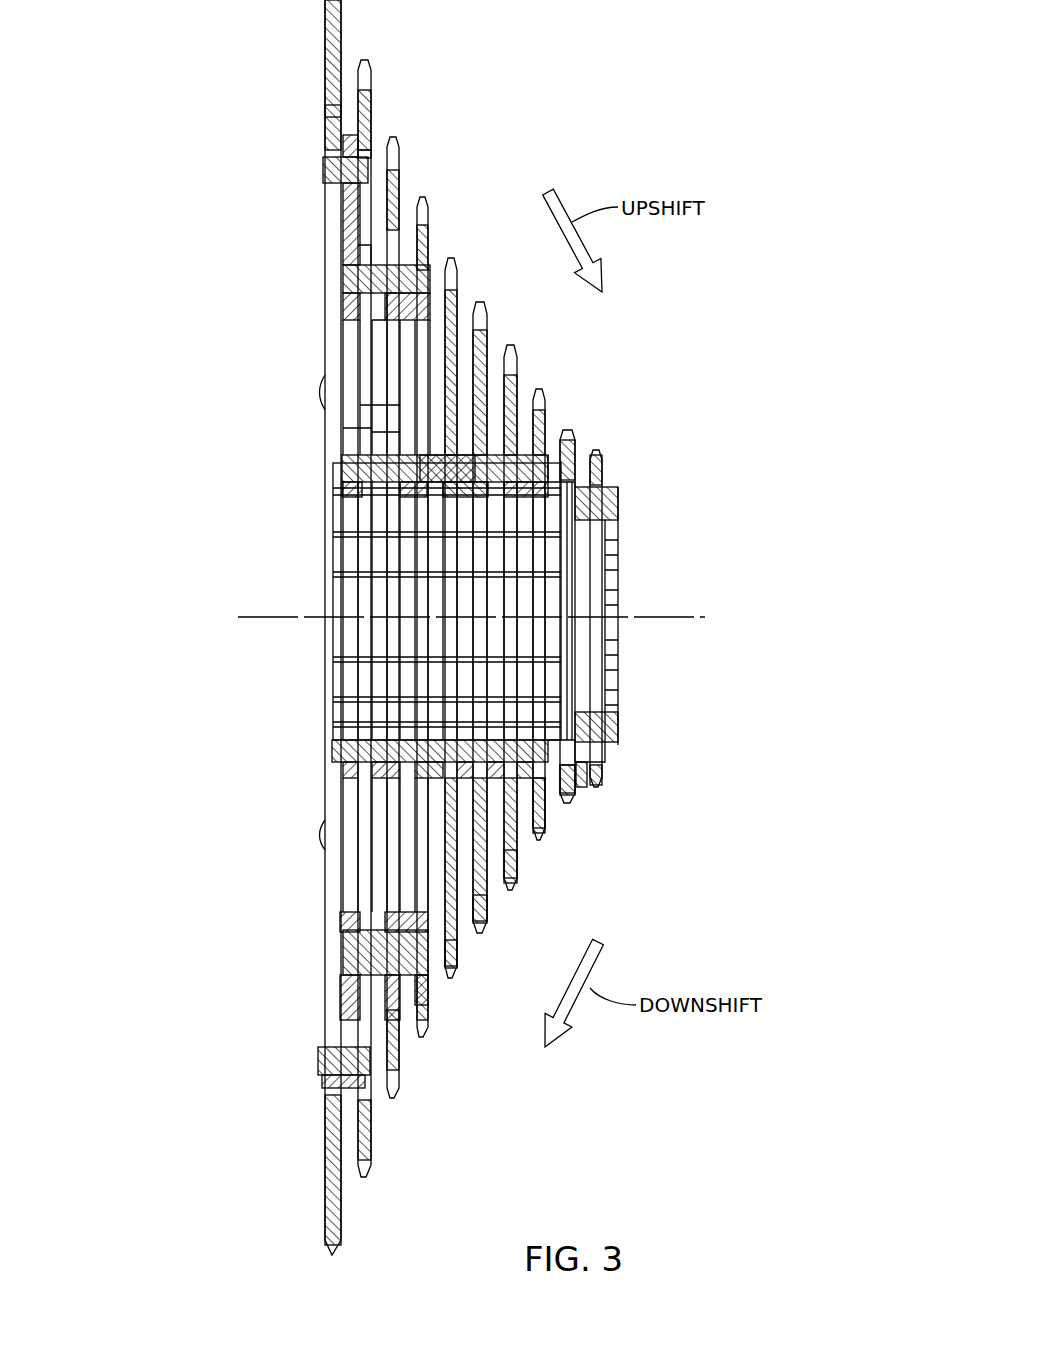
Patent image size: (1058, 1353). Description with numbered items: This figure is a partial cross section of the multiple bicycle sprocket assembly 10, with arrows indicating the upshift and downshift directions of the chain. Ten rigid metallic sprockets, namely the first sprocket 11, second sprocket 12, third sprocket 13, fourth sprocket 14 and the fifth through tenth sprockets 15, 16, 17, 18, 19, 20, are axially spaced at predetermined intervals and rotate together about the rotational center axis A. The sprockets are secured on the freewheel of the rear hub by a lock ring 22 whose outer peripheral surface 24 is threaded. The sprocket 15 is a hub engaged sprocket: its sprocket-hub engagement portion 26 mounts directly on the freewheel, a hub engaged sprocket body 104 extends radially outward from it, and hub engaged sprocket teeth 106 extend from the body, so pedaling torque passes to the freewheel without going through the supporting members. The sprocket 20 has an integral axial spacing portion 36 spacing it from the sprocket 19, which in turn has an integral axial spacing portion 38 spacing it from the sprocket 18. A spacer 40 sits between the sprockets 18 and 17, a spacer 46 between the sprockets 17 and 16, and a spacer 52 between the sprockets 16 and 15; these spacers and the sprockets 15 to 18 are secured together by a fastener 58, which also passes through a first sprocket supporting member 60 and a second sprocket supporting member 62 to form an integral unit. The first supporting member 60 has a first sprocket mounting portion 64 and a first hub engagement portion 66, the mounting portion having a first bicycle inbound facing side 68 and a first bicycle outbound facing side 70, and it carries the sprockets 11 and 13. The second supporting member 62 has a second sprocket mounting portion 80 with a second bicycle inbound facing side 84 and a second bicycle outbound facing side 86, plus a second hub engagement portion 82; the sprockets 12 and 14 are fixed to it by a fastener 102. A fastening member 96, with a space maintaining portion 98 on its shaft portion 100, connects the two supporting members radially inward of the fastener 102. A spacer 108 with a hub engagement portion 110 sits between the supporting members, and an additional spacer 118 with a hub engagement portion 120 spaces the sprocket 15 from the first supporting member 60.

The multiple bicycle sprocket assembly 10 is at (641, 351).
The first sprocket 11 is at (432, 203).
The second sprocket 12 is at (376, 72).
The third sprocket 13 is at (404, 158).
The fourth sprocket 14 is at (322, 22).
The fifth sprocket 15 is at (462, 275).
The sixth sprocket 16 is at (491, 318).
The seventh sprocket 17 is at (520, 362).
The eighth sprocket 18 is at (547, 396).
The ninth sprocket 19 is at (577, 437).
The tenth sprocket 20 is at (606, 455).
The lock ring 22 is at (619, 522).
The outer peripheral surface 24 is at (600, 762).
The sprocket-hub engagement portion 26 is at (455, 740).
The integral axial spacing portion 36 is at (586, 786).
The integral axial spacing portion 38 is at (561, 800).
The spacer 40 is at (525, 790).
The spacer 46 is at (497, 888).
The spacer 52 is at (468, 932).
The fastener 58 is at (318, 390).
The first sprocket supporting member 60 is at (394, 352).
The second sprocket supporting member 62 is at (340, 230).
The first sprocket mounting portion 64 is at (402, 266).
The first hub engagement portion 66 is at (405, 490).
The first bicycle inbound facing side 68 is at (362, 320).
The first bicycle outbound facing side 70 is at (365, 323).
The second sprocket mounting portion 80 is at (340, 113).
The second hub engagement portion 82 is at (352, 488).
The second bicycle inbound facing side 84 is at (343, 148).
The second bicycle outbound facing side 86 is at (360, 152).
The fastening member 96 is at (340, 288).
The space maintaining portion 98 is at (360, 264).
The shaft portion 100 is at (420, 262).
The fastener 102 is at (320, 163).
The hub engaged sprocket body 104 is at (440, 875).
The hub engaged sprocket teeth 106 is at (450, 978).
The spacer 108 is at (376, 445).
The hub engagement portion 110 is at (380, 490).
The spacer 118 is at (435, 452).
The hub engagement portion 120 is at (432, 492).
The rotational center axis A is at (665, 617).